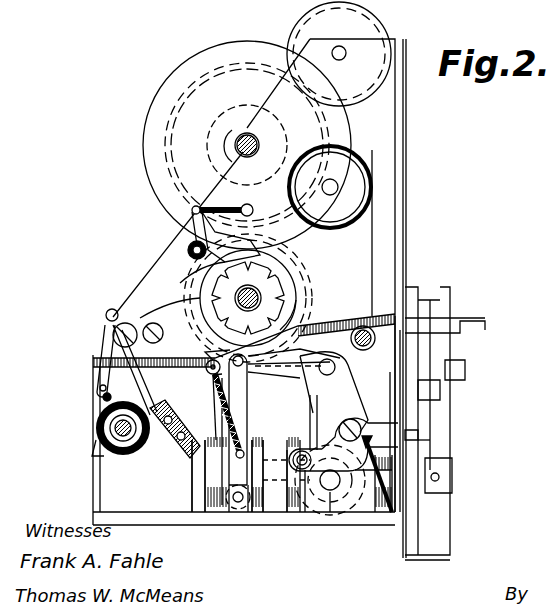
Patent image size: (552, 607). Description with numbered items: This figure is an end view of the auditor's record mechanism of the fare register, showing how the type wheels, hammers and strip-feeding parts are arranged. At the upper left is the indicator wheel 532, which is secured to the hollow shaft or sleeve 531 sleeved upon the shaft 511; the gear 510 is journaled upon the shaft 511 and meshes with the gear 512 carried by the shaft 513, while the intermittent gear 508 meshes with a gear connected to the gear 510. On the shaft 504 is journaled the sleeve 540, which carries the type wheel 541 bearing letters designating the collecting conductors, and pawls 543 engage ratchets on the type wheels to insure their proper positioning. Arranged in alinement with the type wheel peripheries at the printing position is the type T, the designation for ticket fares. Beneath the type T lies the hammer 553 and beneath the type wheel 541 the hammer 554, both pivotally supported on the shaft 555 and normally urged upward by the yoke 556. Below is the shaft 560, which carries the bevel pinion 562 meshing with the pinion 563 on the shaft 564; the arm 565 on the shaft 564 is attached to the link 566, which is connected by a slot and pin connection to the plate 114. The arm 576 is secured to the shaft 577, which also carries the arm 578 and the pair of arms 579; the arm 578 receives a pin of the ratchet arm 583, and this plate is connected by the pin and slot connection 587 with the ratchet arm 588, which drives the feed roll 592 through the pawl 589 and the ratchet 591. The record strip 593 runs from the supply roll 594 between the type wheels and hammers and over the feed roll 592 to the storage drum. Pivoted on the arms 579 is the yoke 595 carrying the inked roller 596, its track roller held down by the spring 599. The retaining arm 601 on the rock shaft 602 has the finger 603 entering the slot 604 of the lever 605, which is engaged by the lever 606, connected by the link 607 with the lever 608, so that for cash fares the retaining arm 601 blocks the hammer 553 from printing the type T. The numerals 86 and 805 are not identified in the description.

The indicator wheel 532 is at (188, 55).
The gear 510 is at (245, 66).
The hollow shaft or sleeve 531 is at (247, 128).
The shaft 511 is at (233, 141).
The type T is at (195, 262).
The gear 512 is at (380, 26).
The shaft 513 is at (339, 46).
The supply roll 594 is at (357, 201).
The record strip 593 is at (373, 250).
The pawls 543 is at (190, 227).
The intermittent gear 508 is at (183, 283).
The feed roll 592 is at (140, 318).
The type wheel 541 is at (262, 296).
The shaft 504 is at (285, 292).
The sleeve 540 is at (275, 285).
The inked roller 596 is at (303, 310).
The lever 608 is at (415, 290).
The link 566 is at (462, 366).
The link 607 is at (425, 398).
The plate 114 is at (438, 418).
The arm 565 is at (440, 424).
The lever 606 is at (420, 440).
The shaft 564 is at (453, 477).
The pawl 589 is at (106, 318).
The ratchet arm 588 is at (110, 370).
The pin and slot connection 587 is at (100, 398).
The ratchet arm 583 is at (96, 428).
The shaft 86 is at (90, 455).
The arm 578 is at (180, 458).
The rock shaft 602 is at (196, 470).
The arms 579 is at (225, 416).
The retaining arm 601 is at (228, 382).
The spring 599 is at (226, 402).
The ratchet 591 is at (205, 362).
The yoke 595 is at (210, 374).
The hammer 553 is at (252, 392).
The hammer 554 is at (262, 360).
The yoke 556 is at (308, 393).
The shaft 555 is at (336, 367).
The finger 603 is at (346, 426).
The lever 605 is at (358, 415).
The slot 604 is at (302, 451).
The bevel pinion 562 is at (300, 512).
The shaft 577 is at (238, 511).
The arm 576 is at (290, 512).
The shaft 560 is at (306, 500).
The pin 805 is at (333, 495).
The pinion 563 is at (360, 482).